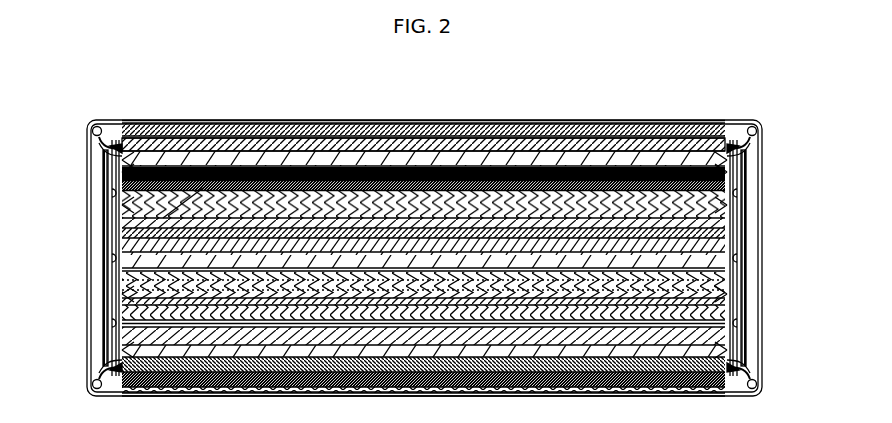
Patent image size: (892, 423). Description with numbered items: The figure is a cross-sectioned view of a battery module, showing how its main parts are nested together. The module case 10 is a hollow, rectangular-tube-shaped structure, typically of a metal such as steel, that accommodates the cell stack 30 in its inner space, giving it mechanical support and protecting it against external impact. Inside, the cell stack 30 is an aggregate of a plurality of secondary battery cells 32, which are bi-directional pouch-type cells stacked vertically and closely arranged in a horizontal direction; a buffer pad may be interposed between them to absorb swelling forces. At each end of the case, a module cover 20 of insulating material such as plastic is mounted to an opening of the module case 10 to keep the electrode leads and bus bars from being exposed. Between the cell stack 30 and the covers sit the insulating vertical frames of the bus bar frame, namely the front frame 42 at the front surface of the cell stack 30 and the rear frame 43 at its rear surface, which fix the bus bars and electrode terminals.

The module case 10 is at (479, 121).
The module cover 20 is at (88, 150).
The cell stack 30 is at (350, 126).
The secondary battery cell 32 is at (264, 150).
The front frame 42 is at (94, 327).
The rear frame 43 is at (755, 303).